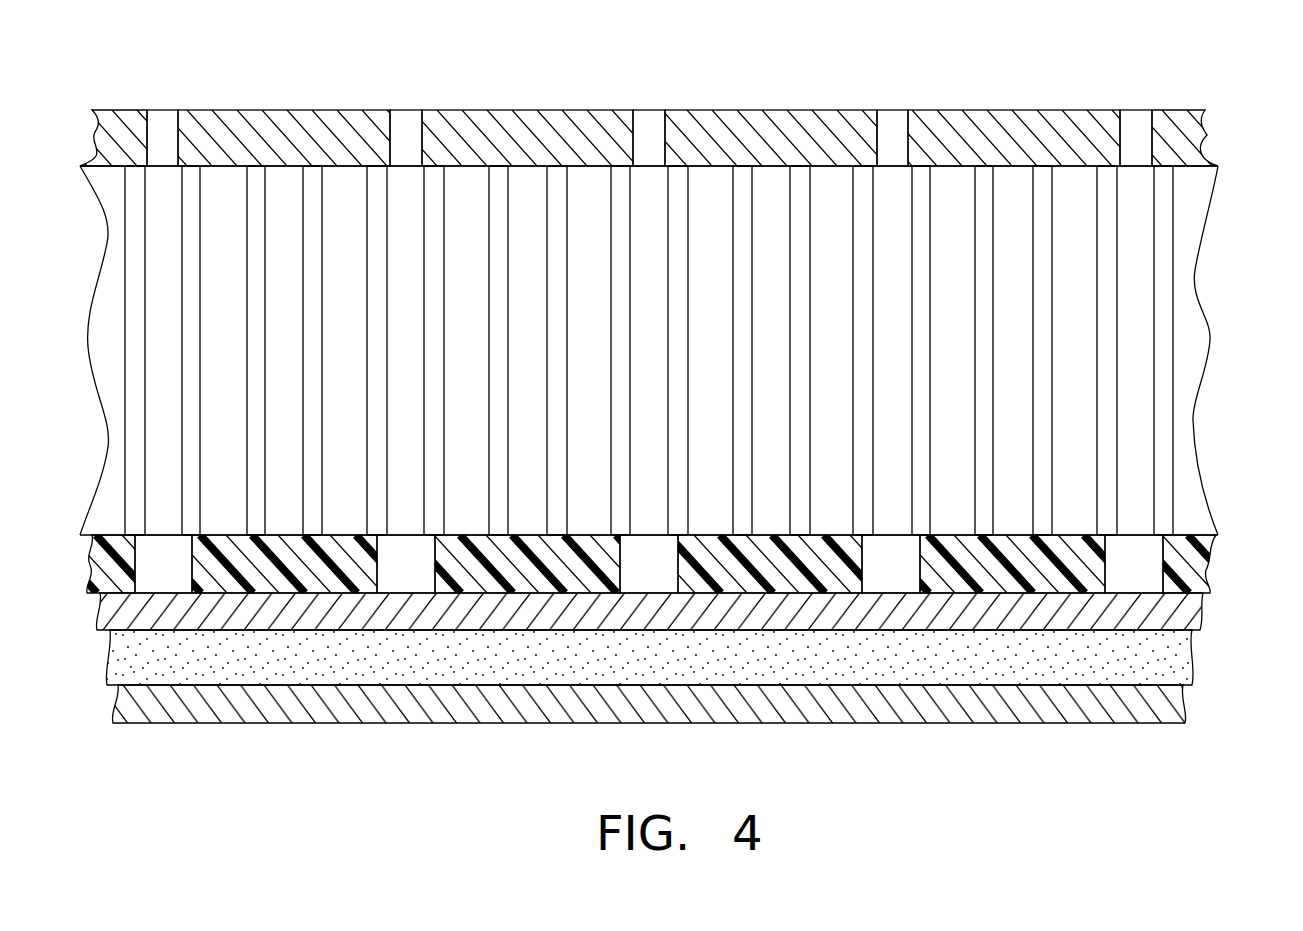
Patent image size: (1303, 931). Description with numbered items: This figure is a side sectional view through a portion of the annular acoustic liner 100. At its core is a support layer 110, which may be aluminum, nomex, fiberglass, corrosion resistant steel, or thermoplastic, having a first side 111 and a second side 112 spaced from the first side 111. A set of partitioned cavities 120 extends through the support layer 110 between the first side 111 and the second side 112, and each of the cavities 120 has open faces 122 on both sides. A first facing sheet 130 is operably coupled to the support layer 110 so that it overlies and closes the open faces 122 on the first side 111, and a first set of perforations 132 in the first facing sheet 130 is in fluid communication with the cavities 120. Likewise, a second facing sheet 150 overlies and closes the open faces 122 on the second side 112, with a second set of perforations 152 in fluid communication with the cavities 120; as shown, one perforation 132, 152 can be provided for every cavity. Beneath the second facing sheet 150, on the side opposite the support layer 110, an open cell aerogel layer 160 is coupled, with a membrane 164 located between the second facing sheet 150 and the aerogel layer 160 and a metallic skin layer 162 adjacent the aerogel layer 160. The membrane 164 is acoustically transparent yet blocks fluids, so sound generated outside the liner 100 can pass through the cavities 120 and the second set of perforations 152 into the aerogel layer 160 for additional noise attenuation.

The annular acoustic liner 100 is at (222, 57).
The support layer 110 is at (665, 411).
The first side 111 is at (147, 167).
The second side 112 is at (153, 535).
The set of partitioned cavities 120 is at (650, 207).
The open faces 122 is at (583, 165).
The first facing sheet 130 is at (691, 117).
The first set of perforations 132 is at (182, 135).
The second facing sheet 150 is at (692, 646).
The second set of perforations 152 is at (137, 577).
The aerogel layer 160 is at (1168, 658).
The metallic skin layer 162 is at (1163, 703).
The membrane 164 is at (1168, 607).